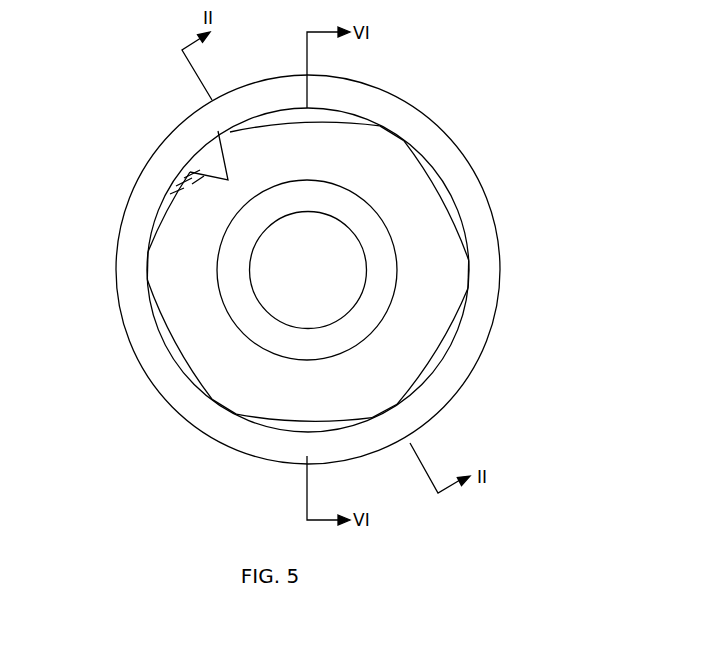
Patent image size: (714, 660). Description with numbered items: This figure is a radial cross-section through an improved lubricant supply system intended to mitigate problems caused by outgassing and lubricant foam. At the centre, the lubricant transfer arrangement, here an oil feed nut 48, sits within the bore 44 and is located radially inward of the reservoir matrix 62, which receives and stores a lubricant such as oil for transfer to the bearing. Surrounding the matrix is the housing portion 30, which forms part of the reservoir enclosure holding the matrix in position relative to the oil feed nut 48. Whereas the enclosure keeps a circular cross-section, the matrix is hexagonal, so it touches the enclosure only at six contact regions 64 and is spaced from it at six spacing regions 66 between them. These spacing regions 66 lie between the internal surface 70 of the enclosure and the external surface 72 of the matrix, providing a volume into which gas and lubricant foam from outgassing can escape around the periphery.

The housing portion 30 is at (466, 166).
The bore 44 is at (373, 320).
The oil feed nut 48 is at (310, 275).
The reservoir matrix 62 is at (313, 269).
The contact regions 64 is at (390, 126).
The spacing regions 66 is at (305, 112).
The internal surface 70 is at (228, 180).
The external surface 72 is at (178, 190).